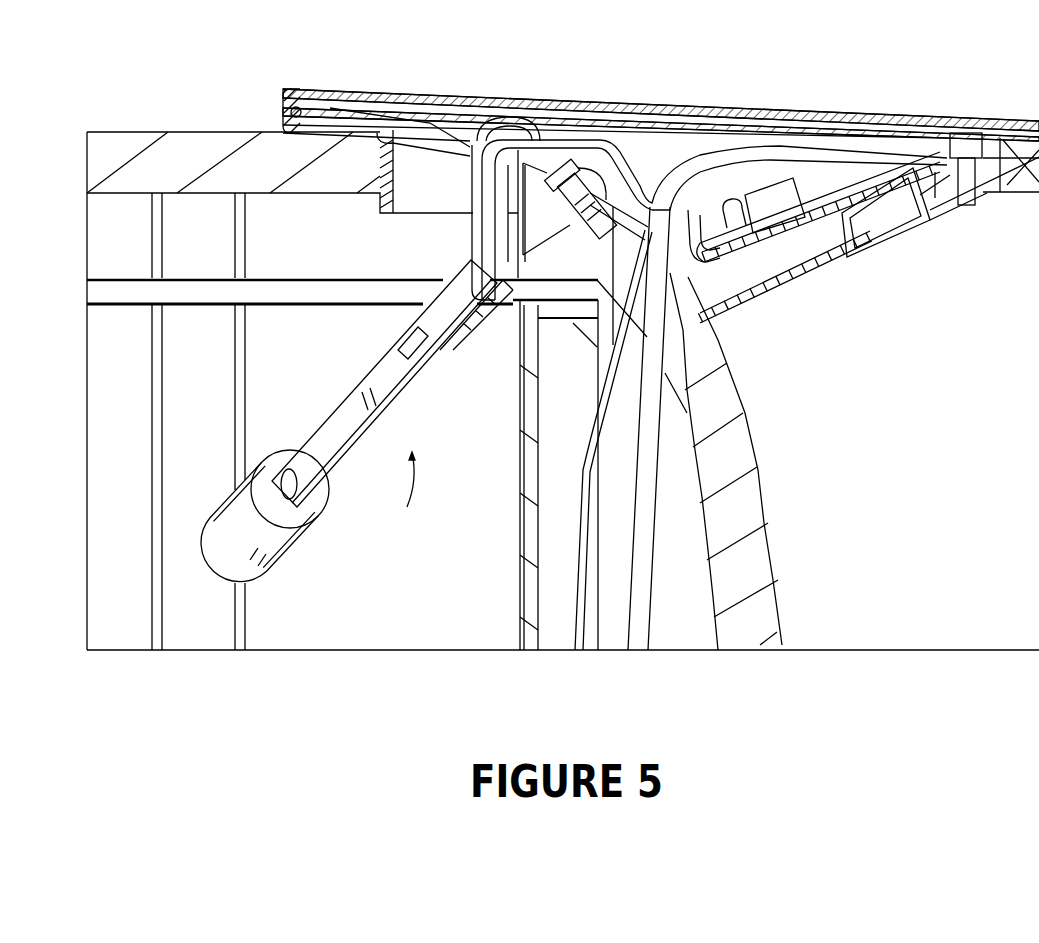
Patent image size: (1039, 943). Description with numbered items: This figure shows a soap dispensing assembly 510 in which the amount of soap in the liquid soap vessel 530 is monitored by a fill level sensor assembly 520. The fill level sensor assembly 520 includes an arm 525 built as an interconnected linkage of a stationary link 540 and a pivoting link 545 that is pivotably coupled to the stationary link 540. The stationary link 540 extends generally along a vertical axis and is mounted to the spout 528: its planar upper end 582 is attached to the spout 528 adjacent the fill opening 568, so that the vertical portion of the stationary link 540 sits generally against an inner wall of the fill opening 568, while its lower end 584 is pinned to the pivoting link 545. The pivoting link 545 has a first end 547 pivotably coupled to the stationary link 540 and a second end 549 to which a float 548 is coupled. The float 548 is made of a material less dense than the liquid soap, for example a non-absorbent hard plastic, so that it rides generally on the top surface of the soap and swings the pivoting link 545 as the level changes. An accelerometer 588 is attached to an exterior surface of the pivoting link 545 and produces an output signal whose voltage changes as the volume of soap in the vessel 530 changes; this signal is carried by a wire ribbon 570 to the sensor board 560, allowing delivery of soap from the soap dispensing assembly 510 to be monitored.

The soap dispensing assembly 510 is at (693, 90).
The fill level sensor assembly 520 is at (405, 498).
The arm 525 is at (432, 262).
The spout 528 is at (610, 140).
The soap vessel 530 is at (558, 520).
The stationary link 540 is at (508, 230).
The pivoting link 545 is at (387, 387).
The first end 547 is at (542, 322).
The float 548 is at (262, 547).
The second end 549 is at (298, 453).
The sensor board 560 is at (875, 222).
The fill opening 568 is at (433, 135).
The wire ribbon 570 is at (467, 268).
The planar upper end 582 is at (485, 147).
The lower end 584 is at (482, 318).
The accelerometer 588 is at (400, 340).